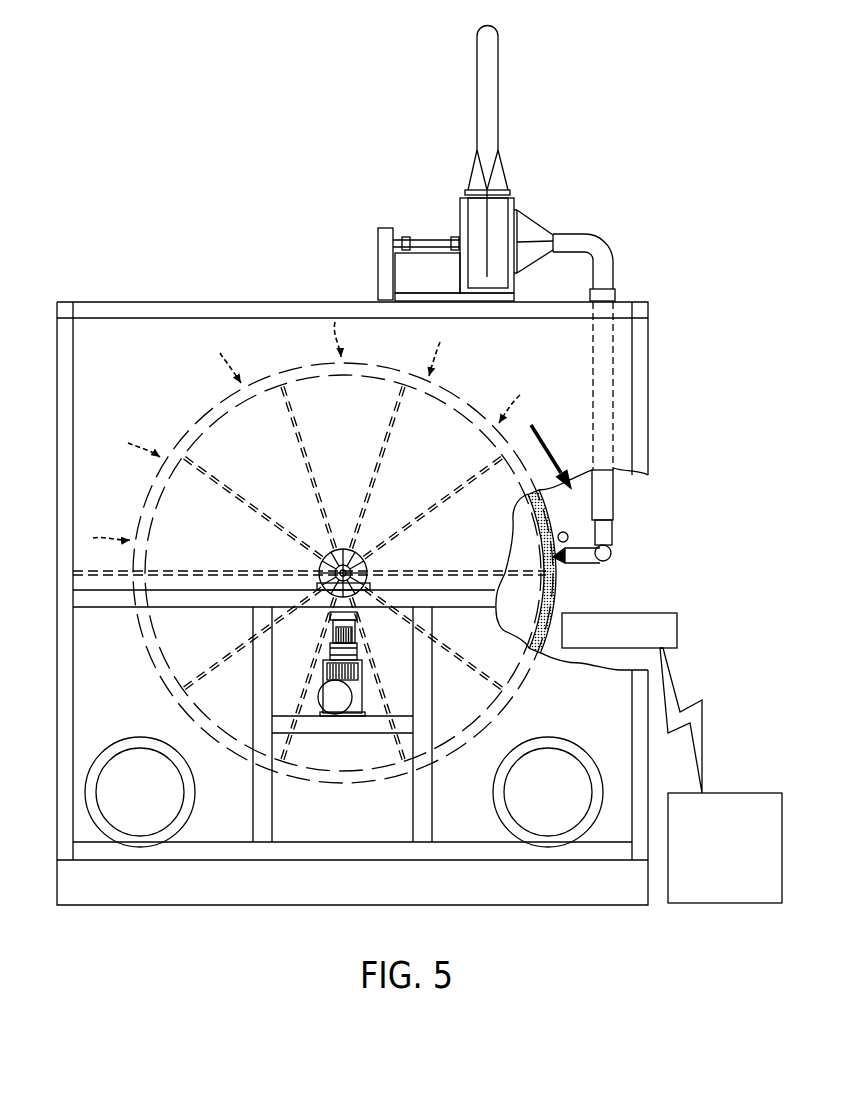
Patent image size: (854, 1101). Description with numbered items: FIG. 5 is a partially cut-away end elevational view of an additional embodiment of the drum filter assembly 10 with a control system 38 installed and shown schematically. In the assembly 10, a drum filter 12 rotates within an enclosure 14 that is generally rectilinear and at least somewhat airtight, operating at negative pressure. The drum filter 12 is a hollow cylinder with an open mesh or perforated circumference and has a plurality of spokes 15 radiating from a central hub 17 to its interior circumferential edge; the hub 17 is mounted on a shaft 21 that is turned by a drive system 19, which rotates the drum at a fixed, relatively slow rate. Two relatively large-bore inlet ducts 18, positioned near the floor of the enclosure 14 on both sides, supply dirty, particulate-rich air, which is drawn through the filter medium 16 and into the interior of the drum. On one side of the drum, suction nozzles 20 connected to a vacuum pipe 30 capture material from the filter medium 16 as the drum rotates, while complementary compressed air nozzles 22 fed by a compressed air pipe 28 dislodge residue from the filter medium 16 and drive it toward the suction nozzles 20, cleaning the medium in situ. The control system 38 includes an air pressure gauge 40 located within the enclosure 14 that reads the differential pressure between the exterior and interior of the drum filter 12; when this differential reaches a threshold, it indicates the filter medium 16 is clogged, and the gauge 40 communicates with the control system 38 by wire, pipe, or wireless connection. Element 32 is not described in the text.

The drum filter assembly 10 is at (676, 278).
The drum filter 12 is at (188, 427).
The enclosure 14 is at (57, 362).
The spokes 15 is at (318, 490).
The filter medium 16 is at (556, 596).
The central hub 17 is at (366, 565).
The inlet ducts 18 is at (133, 845).
The drive system 19 is at (335, 697).
The suction nozzles 20 is at (594, 563).
The shaft 21 is at (320, 570).
The compressed air nozzles 22 is at (559, 539).
The compressed air pipe 28 is at (594, 537).
The vacuum pipe 30 is at (615, 493).
The blower 32 is at (460, 210).
The control system 38 is at (747, 793).
The air pressure gauge 40 is at (677, 622).